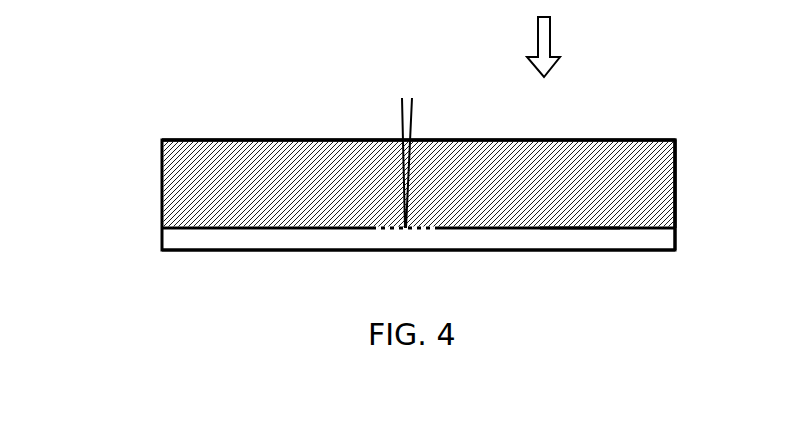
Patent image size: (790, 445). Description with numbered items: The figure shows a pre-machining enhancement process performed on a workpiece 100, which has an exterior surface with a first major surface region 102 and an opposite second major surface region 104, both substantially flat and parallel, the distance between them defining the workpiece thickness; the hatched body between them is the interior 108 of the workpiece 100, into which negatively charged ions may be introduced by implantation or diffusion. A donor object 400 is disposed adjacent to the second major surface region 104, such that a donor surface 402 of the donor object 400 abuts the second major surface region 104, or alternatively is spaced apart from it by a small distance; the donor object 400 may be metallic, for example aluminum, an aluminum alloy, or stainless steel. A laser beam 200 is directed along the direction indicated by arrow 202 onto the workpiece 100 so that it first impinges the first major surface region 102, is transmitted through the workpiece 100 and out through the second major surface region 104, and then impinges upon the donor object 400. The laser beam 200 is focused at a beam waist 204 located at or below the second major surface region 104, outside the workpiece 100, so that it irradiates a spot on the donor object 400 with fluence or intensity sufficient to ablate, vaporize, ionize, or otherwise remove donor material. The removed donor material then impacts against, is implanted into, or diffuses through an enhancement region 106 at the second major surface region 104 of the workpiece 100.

The workpiece 100 is at (104, 62).
The first major surface region 102 is at (202, 138).
The second major surface region 104 is at (203, 232).
The enhancement region 106 is at (425, 239).
The interior 108 is at (311, 145).
The laser beam 200 is at (413, 112).
The arrow 202 is at (553, 52).
The beam waist 204 is at (403, 235).
The donor object 400 is at (676, 230).
The donor surface 402 is at (578, 224).